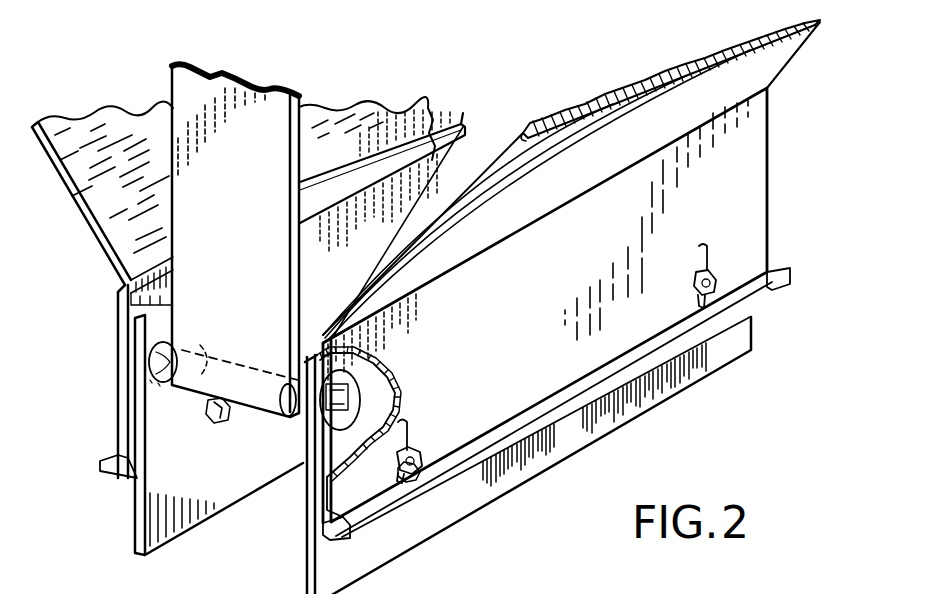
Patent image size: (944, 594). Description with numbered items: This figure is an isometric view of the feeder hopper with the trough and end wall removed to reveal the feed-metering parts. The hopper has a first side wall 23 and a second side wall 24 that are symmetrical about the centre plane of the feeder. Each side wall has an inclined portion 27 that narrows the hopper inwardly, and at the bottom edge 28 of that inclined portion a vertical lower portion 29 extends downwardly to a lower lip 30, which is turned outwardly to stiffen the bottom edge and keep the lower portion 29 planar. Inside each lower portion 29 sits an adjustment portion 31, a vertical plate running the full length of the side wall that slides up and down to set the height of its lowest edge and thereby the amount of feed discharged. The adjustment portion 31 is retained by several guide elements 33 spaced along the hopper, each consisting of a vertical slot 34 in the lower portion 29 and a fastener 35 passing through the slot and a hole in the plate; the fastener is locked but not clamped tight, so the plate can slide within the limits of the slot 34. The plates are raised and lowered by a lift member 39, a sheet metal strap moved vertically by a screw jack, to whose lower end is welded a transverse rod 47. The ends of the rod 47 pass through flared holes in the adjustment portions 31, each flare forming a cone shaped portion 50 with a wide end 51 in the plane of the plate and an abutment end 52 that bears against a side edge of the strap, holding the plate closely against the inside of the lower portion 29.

The first side wall 23 is at (80, 222).
The second side wall 24 is at (570, 172).
The inclined portion 27 is at (100, 258).
The bottom edge of inclined portion 28 is at (112, 290).
The vertical lower portion 29 is at (116, 358).
The lower lip 30 is at (114, 458).
The adjustment portion 31 is at (134, 511).
The guide element 33 is at (718, 267).
The vertical slot 34 is at (698, 262).
The fastener 35 is at (228, 424).
The lift member 39 is at (197, 92).
The transverse rod 47 is at (243, 366).
The cone shaped portion 50 is at (152, 386).
The wide end 51 is at (388, 356).
The abutment end 52 is at (198, 347).